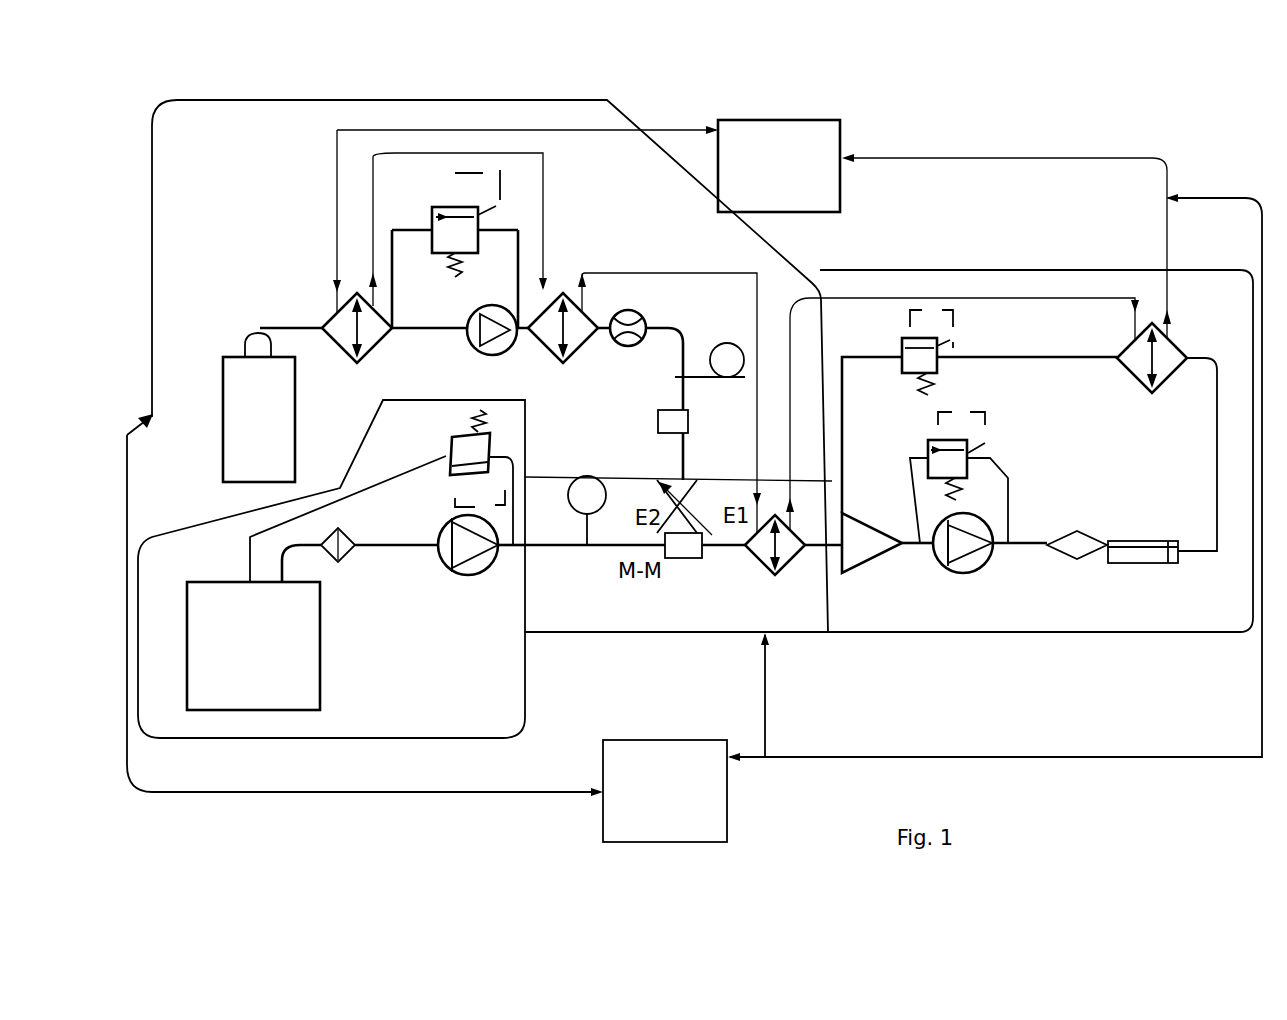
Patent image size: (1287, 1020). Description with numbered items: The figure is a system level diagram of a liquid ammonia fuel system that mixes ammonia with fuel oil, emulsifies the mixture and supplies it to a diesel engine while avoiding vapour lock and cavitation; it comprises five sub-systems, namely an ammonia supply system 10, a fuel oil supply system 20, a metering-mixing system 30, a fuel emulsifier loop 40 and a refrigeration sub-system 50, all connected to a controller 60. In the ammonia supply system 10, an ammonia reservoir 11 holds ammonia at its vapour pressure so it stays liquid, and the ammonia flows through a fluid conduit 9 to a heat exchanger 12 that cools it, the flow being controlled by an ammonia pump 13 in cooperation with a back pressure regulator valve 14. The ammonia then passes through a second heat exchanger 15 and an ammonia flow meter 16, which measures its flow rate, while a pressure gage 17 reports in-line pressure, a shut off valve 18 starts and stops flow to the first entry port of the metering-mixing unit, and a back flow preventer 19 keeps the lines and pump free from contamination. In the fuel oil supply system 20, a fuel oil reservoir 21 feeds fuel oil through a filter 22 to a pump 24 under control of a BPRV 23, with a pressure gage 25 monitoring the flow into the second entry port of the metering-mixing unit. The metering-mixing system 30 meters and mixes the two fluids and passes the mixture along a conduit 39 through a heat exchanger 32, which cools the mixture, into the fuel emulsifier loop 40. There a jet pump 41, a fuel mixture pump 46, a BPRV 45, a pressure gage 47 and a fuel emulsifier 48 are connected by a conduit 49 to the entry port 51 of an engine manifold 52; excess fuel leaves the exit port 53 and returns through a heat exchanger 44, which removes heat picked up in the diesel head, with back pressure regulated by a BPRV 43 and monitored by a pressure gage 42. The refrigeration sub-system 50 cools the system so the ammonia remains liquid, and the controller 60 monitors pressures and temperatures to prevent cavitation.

The fluid conduit 9 is at (291, 309).
The ammonia supply system 10 is at (513, 205).
The ammonia reservoir 11 is at (259, 407).
The heat exchanger 12 is at (357, 278).
The ammonia pump 13 is at (460, 274).
The back pressure regulator valve 14 is at (462, 249).
The second heat exchanger 15 is at (644, 403).
The ammonia flow meter 16 is at (640, 360).
The pressure gage 17 is at (722, 428).
The shut off valve 18 is at (689, 507).
The back flow preventer 19 is at (660, 466).
The fuel oil supply system 20 is at (530, 693).
The fuel oil reservoir 21 is at (316, 583).
The filter 22 is at (379, 558).
The BPRV 23 is at (462, 477).
The pump 24 is at (481, 562).
The pressure gage 25 is at (583, 493).
The metering-mixing system 30 is at (638, 636).
The heat exchanger 32 is at (793, 561).
The conduit 39 is at (724, 566).
The fuel emulsifier loop 40 is at (1250, 345).
The jet pump 41 is at (872, 528).
The pressure gage 42 is at (872, 435).
The BPRV 43 is at (962, 414).
The heat exchanger 44 is at (1029, 352).
The BPRV 45 is at (1009, 352).
The fuel mixture pump 46 is at (990, 560).
The pressure gage 47 is at (980, 477).
The fuel emulsifier 48 is at (1077, 522).
The conduit 49 is at (883, 599).
The refrigeration sub-system 50 is at (779, 166).
The entry port 51 is at (1143, 524).
The engine manifold 52 is at (1157, 572).
The exit port 53 is at (1163, 573).
The controller 60 is at (665, 791).